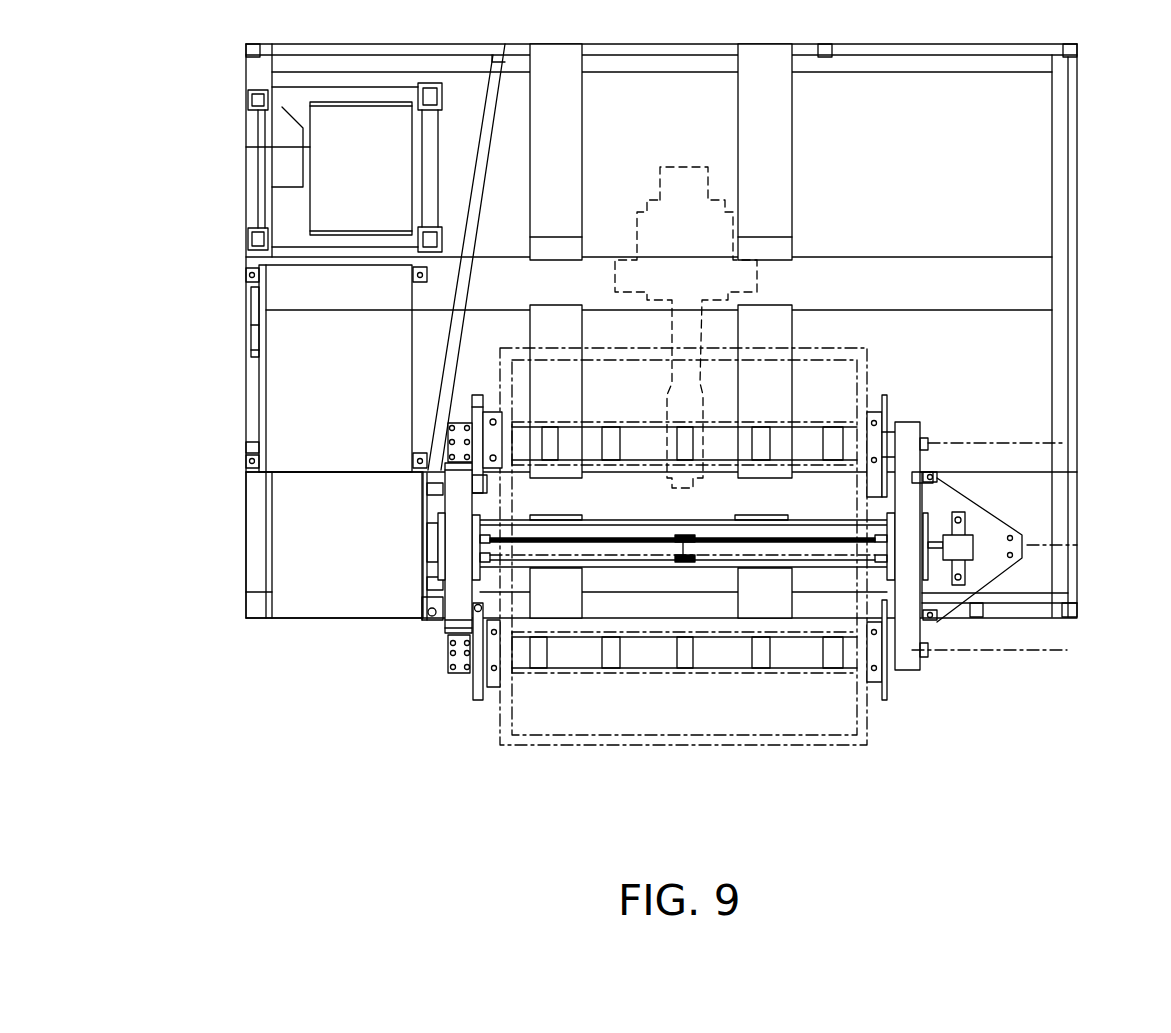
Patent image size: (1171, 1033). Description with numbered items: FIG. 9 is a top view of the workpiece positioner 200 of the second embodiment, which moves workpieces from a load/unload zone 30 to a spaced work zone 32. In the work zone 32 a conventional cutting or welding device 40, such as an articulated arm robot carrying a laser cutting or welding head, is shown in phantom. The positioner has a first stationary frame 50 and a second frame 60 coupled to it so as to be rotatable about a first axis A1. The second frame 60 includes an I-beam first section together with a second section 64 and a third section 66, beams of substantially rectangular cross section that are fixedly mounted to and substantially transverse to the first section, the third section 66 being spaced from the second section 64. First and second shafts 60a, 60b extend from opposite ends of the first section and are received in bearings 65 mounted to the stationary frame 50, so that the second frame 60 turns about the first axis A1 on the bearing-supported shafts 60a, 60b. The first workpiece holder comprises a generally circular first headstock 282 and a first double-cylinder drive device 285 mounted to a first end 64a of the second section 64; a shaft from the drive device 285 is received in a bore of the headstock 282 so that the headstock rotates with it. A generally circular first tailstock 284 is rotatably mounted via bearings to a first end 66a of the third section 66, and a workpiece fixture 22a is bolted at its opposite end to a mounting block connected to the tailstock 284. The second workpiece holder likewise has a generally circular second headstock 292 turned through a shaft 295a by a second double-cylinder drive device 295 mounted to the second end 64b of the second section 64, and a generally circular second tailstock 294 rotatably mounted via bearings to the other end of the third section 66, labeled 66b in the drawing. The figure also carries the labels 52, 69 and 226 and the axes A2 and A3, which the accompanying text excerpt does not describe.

The workpiece fixture 22a is at (812, 745).
The load/unload zone 30 is at (683, 724).
The work zone 32 is at (852, 348).
The conventional device 40 is at (682, 165).
The first stationary frame 50 is at (278, 602).
The side housing 52 is at (285, 612).
The second frame 60 is at (466, 520).
The first shaft 60a is at (430, 548).
The second shaft 60b is at (933, 525).
The second section 64 is at (445, 578).
The first end of second section 64a is at (445, 598).
The second end of second section 64b is at (457, 497).
The bearings 65 is at (443, 530).
The third section 66 is at (923, 437).
The first end of third section 66a is at (913, 662).
The bracket upper portion 66b is at (923, 423).
The coupling 69 is at (617, 552).
The workpiece positioner 200 is at (750, 527).
The upper support beam 226 is at (812, 348).
The first headstock 282 is at (487, 690).
The first tailstock 284 is at (890, 690).
The first double-cylinder drive device 285 is at (455, 672).
The second headstock 292 is at (487, 397).
The second tailstock 294 is at (890, 400).
The second double-cylinder drive device 295 is at (448, 432).
The shaft 295a is at (475, 410).
The first axis A1 is at (1057, 547).
The second axis A2 is at (1040, 650).
The third axis A3 is at (1063, 443).